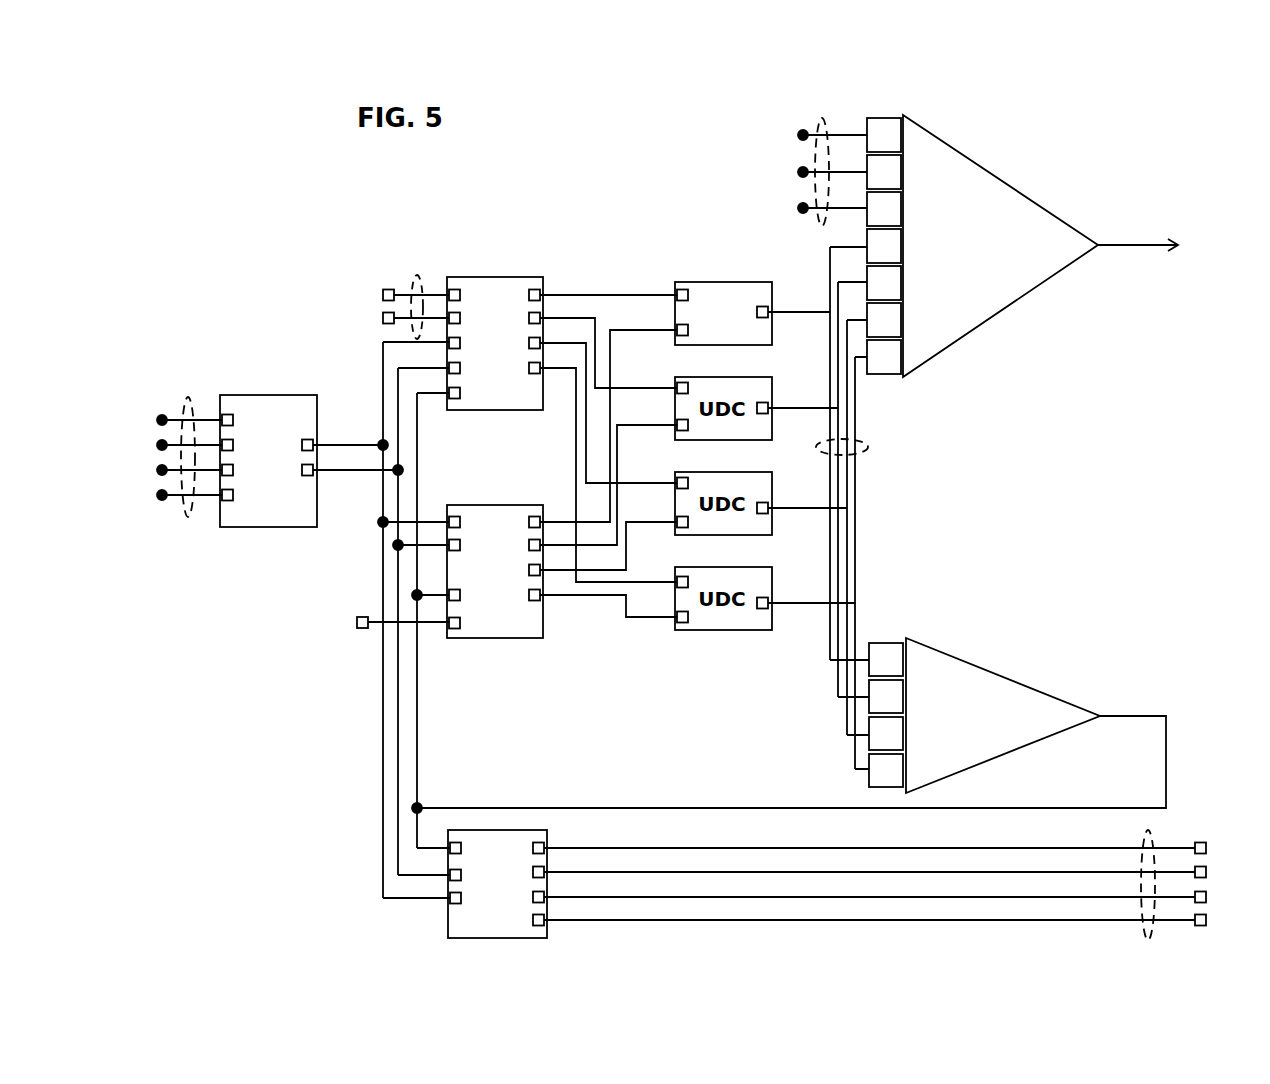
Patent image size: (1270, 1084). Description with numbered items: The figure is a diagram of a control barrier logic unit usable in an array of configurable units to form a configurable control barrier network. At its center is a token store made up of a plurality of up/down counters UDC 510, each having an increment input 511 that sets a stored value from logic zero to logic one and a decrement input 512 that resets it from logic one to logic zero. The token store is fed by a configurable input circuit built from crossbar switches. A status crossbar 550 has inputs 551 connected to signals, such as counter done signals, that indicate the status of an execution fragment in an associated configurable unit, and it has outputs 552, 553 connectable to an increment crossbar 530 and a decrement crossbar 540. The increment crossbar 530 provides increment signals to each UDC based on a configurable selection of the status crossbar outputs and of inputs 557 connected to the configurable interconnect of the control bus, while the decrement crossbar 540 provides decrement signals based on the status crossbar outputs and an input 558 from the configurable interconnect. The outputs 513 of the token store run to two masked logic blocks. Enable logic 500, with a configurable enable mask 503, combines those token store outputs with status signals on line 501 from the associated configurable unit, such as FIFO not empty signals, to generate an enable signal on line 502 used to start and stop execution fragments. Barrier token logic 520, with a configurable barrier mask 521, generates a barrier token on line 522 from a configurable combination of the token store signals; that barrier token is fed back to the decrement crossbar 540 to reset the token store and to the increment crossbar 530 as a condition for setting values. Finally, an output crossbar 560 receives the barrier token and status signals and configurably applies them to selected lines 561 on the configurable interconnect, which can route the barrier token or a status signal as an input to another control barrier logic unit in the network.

The enable logic 500 is at (970, 178).
The status signals line 501 is at (823, 130).
The enable signal line 502 is at (1150, 240).
The configurable enable mask 503 is at (883, 100).
The up/down counter (UDC) 510 is at (723, 290).
The increment input 511 is at (677, 292).
The decrement input 512 is at (677, 326).
The token store outputs 513 is at (868, 448).
The barrier token logic 520 is at (1017, 690).
The configurable barrier mask 521 is at (886, 620).
The barrier token line 522 is at (1127, 716).
The increment crossbar 530 is at (486, 290).
The decrement crossbar 540 is at (490, 640).
The status crossbar 550 is at (270, 515).
The status crossbar inputs 551 is at (190, 400).
The status crossbar output 552 is at (383, 575).
The status crossbar output 553 is at (398, 655).
The increment crossbar inputs 557 is at (418, 276).
The decrement crossbar input 558 is at (357, 623).
The output crossbar 560 is at (448, 925).
The selected lines 561 is at (1145, 921).